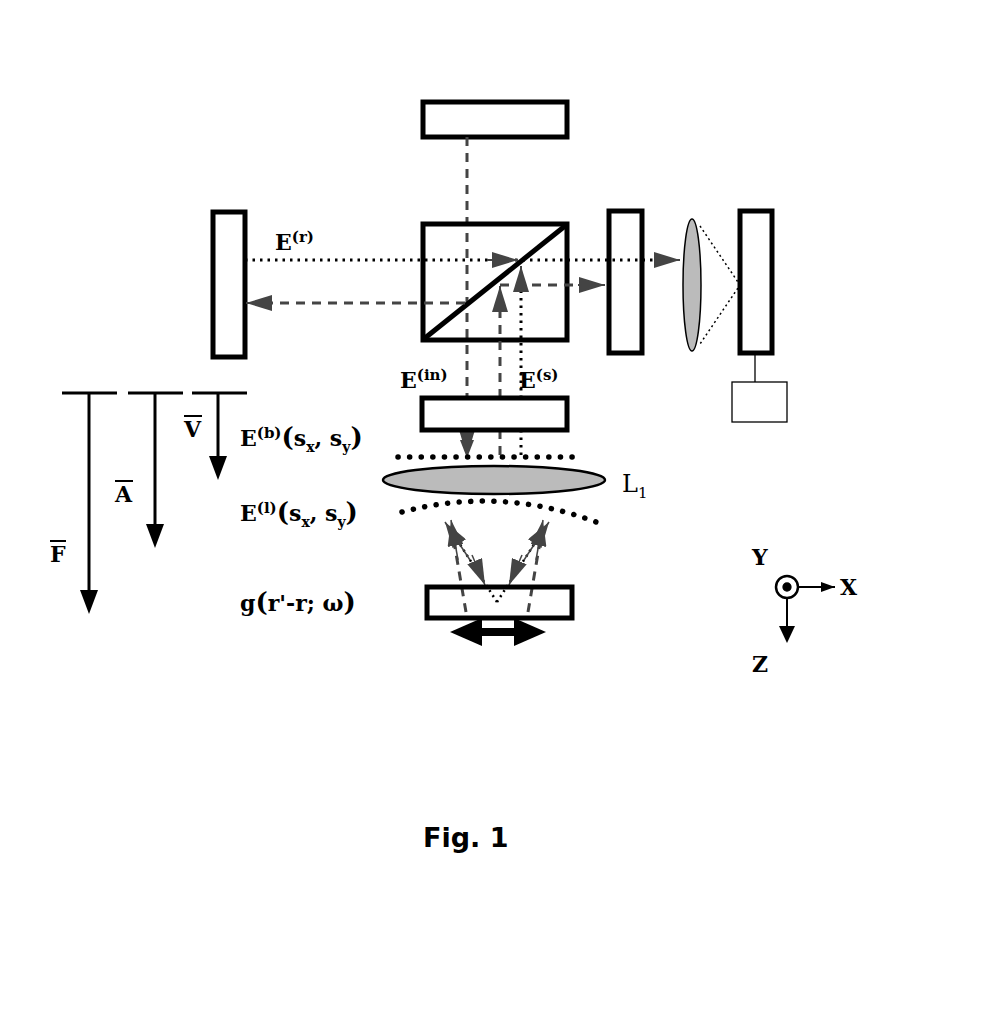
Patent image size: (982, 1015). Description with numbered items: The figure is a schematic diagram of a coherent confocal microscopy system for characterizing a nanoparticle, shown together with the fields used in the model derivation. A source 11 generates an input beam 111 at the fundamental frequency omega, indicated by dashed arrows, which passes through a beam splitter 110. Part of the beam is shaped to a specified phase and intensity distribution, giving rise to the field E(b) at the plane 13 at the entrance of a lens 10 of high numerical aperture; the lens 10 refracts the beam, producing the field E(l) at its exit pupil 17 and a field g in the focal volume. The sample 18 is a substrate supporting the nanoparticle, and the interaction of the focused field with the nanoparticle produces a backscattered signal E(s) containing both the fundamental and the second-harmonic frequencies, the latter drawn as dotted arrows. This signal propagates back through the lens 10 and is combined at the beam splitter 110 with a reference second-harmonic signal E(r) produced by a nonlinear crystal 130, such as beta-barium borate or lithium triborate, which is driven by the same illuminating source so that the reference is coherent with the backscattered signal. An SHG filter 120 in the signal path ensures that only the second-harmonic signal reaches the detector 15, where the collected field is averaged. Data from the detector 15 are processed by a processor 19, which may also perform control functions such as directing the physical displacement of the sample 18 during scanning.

The source 11 is at (550, 115).
The input beam 111 is at (465, 185).
The beam splitter 110 is at (535, 220).
The nonlinear crystal 130 is at (215, 212).
The SHG filter 120 is at (642, 222).
The detector 15 is at (760, 245).
The processor 19 is at (780, 390).
The illumination plane 13 is at (565, 448).
The lens 10 is at (597, 478).
The exit pupil 17 is at (600, 532).
The sample 18 is at (570, 607).